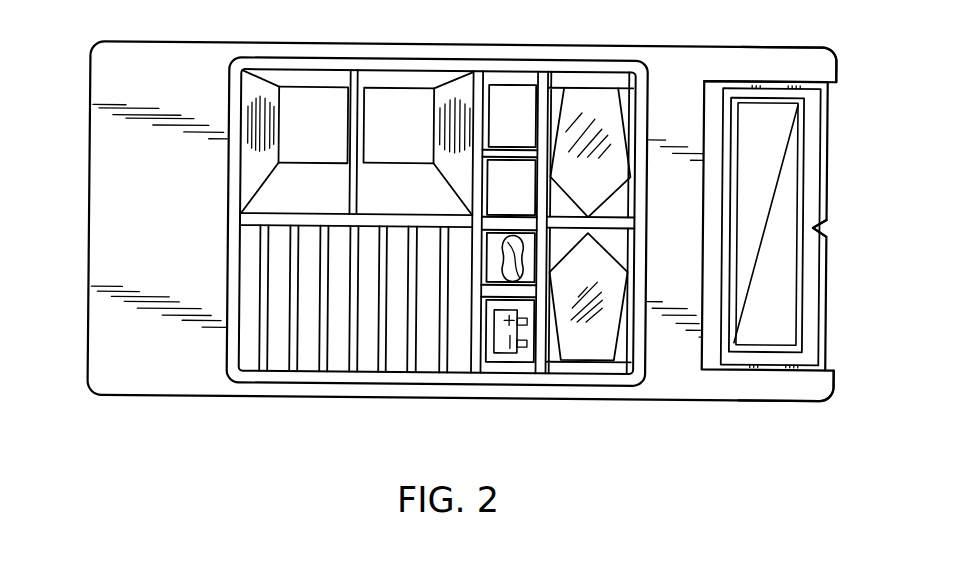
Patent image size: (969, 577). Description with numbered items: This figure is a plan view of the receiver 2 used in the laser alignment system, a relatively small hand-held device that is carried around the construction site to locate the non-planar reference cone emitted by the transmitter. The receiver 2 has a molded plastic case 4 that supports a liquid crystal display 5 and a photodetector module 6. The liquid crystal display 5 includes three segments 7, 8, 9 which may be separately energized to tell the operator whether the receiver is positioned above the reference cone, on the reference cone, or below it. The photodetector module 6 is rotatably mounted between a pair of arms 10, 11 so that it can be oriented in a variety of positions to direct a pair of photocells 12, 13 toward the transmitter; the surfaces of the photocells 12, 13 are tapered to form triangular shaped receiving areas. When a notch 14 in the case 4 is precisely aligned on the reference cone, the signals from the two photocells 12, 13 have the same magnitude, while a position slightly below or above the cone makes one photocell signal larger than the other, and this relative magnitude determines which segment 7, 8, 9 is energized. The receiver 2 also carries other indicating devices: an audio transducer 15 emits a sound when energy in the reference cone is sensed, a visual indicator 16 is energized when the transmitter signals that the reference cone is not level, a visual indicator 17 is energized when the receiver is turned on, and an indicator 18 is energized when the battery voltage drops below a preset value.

The receiver 2 is at (381, 46).
The molded plastic case 4 is at (183, 92).
The liquid crystal display 5 is at (586, 104).
The photodetector module 6 is at (828, 149).
The LCD segment 7 is at (600, 183).
The LCD segment 8 is at (612, 222).
The LCD segment 9 is at (600, 350).
The arm 10 is at (772, 54).
The arm 11 is at (758, 390).
The upper photocell 12 is at (772, 149).
The lower photocell 13 is at (786, 317).
The notch 14 is at (816, 225).
The audio transducer 15 is at (282, 359).
The visual indicator 16 is at (495, 252).
The visual indicator 17 is at (496, 95).
The indicator 18 is at (506, 348).